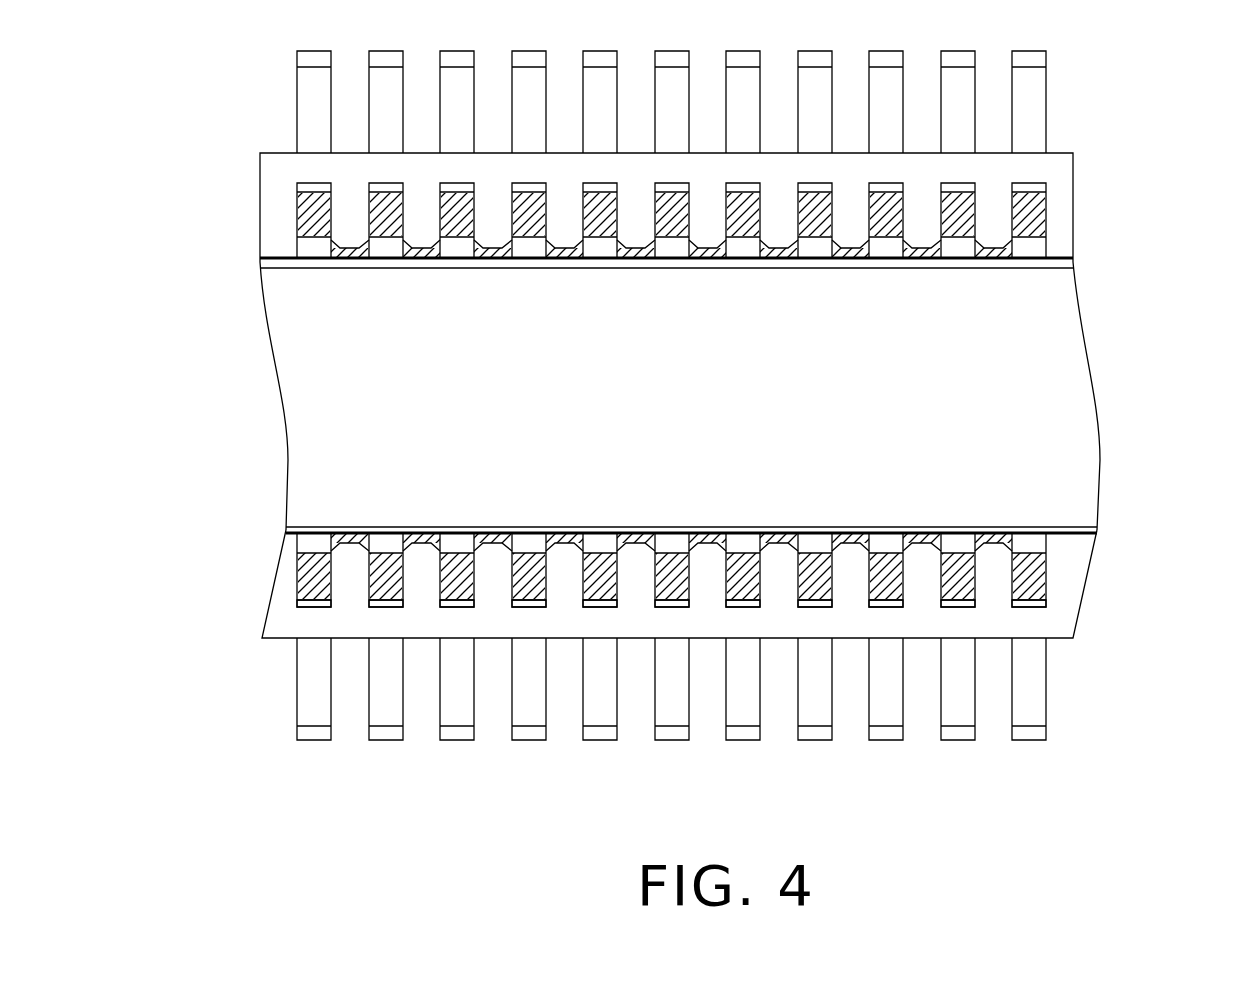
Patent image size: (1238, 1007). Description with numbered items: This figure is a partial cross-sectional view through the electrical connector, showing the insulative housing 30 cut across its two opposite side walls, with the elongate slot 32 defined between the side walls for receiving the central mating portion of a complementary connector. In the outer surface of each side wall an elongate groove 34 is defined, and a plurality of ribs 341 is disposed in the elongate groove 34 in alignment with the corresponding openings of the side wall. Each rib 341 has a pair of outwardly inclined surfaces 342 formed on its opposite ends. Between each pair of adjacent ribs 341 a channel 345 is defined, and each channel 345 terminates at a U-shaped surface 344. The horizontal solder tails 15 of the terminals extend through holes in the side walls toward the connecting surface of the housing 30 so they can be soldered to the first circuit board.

The solder tail 15 is at (312, 680).
The insulative housing 30 is at (1063, 243).
The elongate slot 32 is at (1068, 335).
The elongate groove 34 is at (1060, 598).
The rib 341 is at (1022, 578).
The outwardly inclined surface 342 is at (308, 602).
The U-shaped surface 344 is at (293, 547).
The channel 345 is at (985, 207).